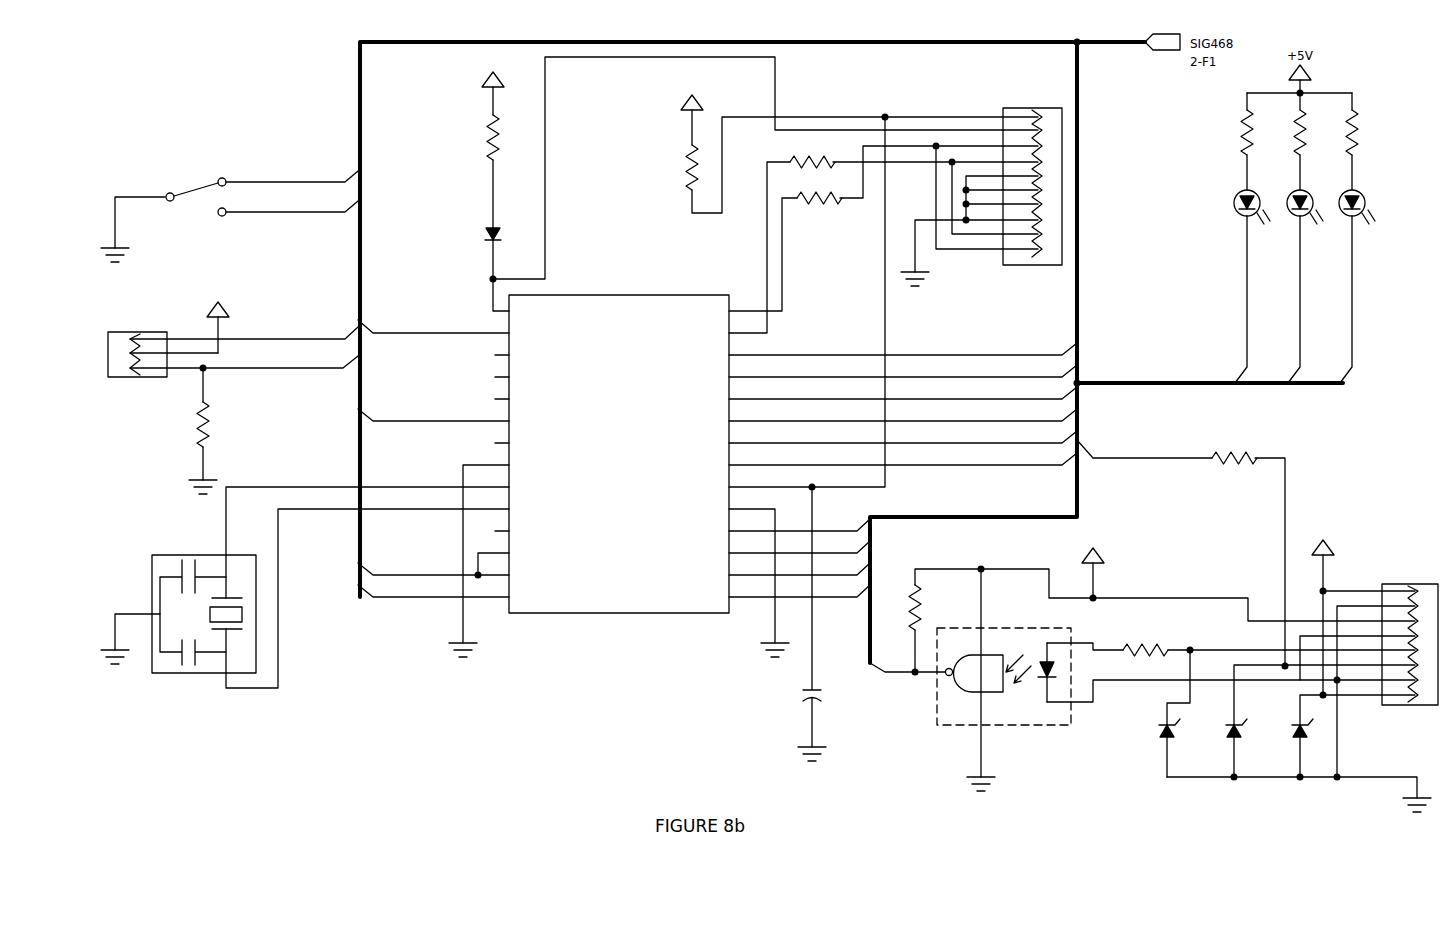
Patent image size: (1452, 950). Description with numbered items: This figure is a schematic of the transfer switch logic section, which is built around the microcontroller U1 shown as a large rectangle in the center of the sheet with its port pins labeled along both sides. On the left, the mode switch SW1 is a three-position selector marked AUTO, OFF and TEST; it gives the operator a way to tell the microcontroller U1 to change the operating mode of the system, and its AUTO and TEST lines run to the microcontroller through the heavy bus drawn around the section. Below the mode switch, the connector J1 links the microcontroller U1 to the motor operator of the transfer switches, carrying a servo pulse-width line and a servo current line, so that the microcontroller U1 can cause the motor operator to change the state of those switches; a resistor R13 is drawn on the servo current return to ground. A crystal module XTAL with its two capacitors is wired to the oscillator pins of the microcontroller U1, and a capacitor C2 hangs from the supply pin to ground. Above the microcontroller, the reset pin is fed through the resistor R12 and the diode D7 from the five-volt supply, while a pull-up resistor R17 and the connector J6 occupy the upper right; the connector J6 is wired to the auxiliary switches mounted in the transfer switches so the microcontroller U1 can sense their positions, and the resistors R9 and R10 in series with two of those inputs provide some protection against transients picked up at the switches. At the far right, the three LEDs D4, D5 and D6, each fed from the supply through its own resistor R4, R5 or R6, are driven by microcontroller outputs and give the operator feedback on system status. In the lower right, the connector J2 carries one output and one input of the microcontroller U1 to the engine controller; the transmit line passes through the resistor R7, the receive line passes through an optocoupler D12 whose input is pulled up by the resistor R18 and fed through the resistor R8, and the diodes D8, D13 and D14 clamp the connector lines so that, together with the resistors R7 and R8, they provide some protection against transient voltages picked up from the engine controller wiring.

The mode switch SW1 is at (229, 201).
The connector J1 is at (233, 359).
The servo current sense resistor R13 is at (210, 430).
The crystal oscillator module XTAL is at (305, 587).
The microcontroller U1 is at (717, 386).
The MCLR pull-up resistor R12 is at (486, 142).
The MCLR diode D7 is at (751, 170).
The pull-up resistor R17 is at (851, 146).
The resistor R10 is at (883, 237).
The resistor R9 is at (883, 227).
The connector J6 is at (981, 187).
The LED current limiting resistor R4 is at (1236, 141).
The LED current limiting resistor R5 is at (1289, 141).
The LED current limiting resistor R6 is at (1341, 141).
The LED D4 is at (1248, 280).
The LED D5 is at (1301, 280).
The LED D6 is at (1353, 280).
The supply decoupling capacitor C2 is at (802, 624).
The resistor R7 is at (1183, 552).
The RX pull-up resistor R18 is at (1142, 604).
The optocoupler D12 is at (1171, 680).
The resistor R8 is at (1269, 641).
The diode D8 is at (1166, 713).
The diode D13 is at (1312, 723).
The diode D14 is at (1345, 708).
The connector J2 is at (1307, 668).